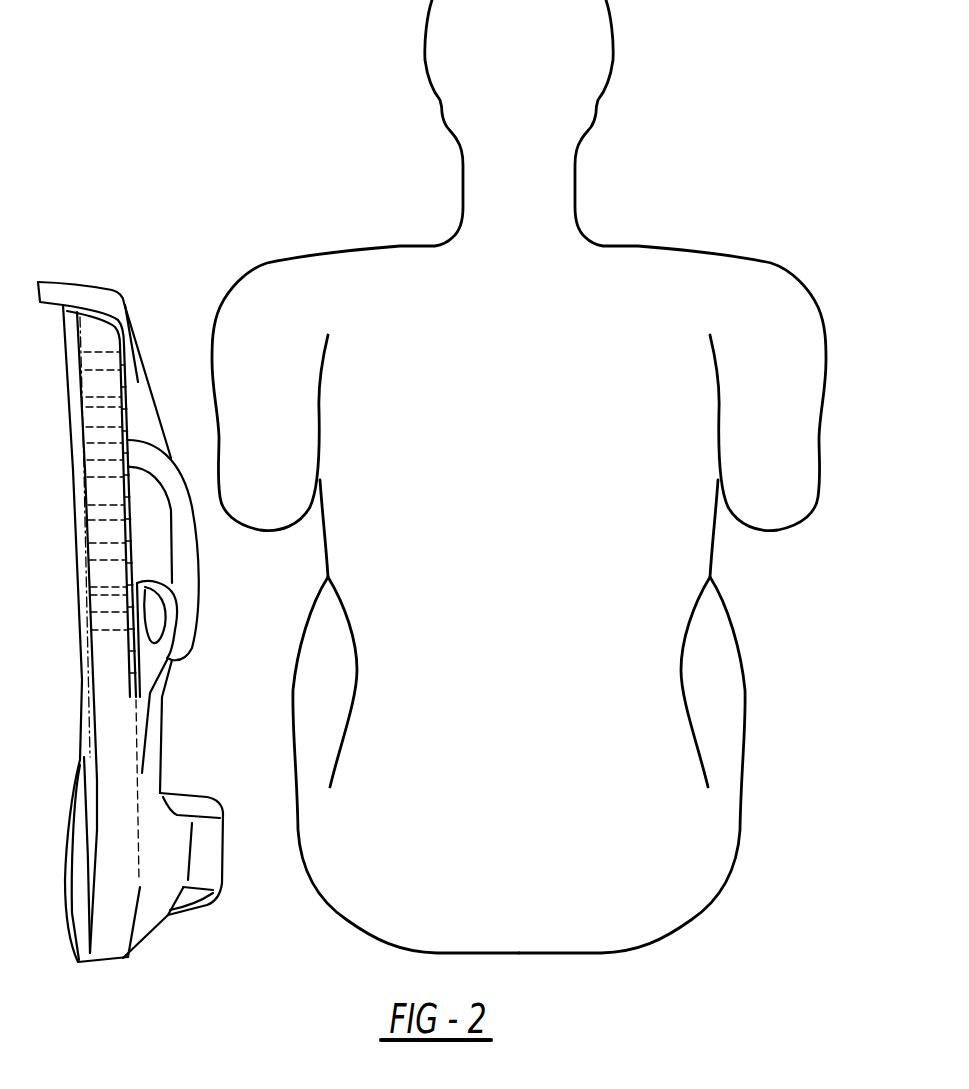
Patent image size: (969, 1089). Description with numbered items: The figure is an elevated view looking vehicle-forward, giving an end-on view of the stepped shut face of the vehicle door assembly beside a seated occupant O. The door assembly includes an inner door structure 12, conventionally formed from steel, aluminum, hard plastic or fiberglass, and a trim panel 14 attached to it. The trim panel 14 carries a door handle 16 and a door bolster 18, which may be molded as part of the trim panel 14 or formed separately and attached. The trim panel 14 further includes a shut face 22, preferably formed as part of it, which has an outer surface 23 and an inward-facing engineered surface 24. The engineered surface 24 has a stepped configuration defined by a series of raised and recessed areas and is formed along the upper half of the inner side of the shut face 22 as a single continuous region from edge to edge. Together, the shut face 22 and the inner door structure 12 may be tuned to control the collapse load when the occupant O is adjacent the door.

The seated occupant O is at (620, 310).
The inner door structure 12 is at (80, 800).
The trim panel 14 is at (127, 330).
The door handle 16 is at (185, 537).
The door bolster 18 is at (212, 847).
The shut face 22 is at (113, 642).
The outer surface 23 is at (113, 679).
The engineered surface 24 is at (103, 465).